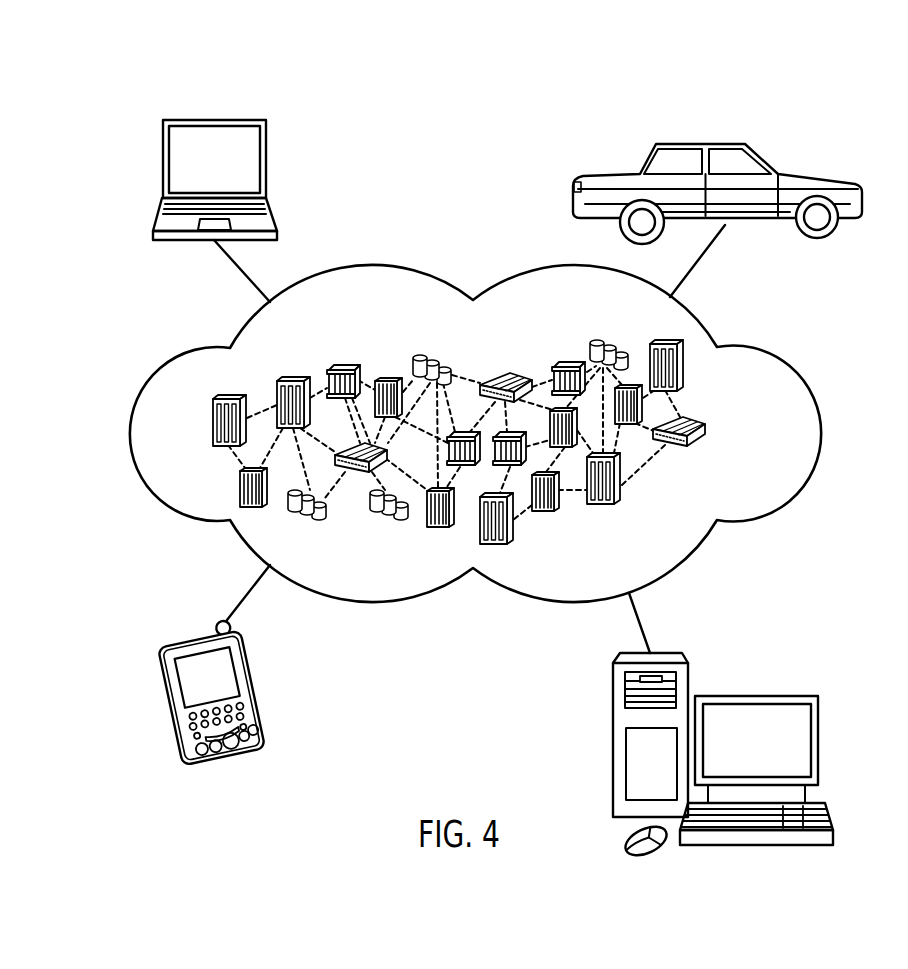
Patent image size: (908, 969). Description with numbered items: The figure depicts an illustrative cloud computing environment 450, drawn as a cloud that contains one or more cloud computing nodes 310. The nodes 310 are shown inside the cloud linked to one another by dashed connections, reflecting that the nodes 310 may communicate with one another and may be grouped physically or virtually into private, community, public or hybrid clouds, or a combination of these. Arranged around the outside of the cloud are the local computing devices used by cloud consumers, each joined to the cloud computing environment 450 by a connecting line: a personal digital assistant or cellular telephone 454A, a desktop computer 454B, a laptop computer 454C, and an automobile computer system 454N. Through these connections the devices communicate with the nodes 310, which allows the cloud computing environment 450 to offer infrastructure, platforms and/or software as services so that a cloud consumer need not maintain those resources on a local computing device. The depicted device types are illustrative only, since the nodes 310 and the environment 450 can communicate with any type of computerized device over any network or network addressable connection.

The cloud computing environment 450 is at (768, 347).
The cloud computing node 310 is at (713, 433).
The personal digital assistant or cellular telephone 454A is at (197, 640).
The desktop computer 454B is at (756, 696).
The laptop computer 454C is at (214, 120).
The automobile computer system 454N is at (700, 140).